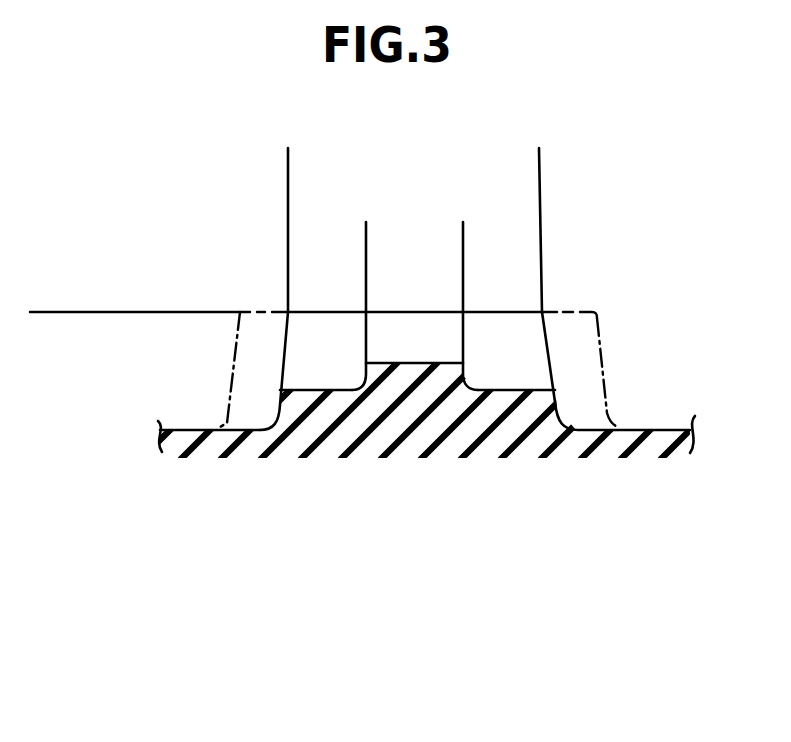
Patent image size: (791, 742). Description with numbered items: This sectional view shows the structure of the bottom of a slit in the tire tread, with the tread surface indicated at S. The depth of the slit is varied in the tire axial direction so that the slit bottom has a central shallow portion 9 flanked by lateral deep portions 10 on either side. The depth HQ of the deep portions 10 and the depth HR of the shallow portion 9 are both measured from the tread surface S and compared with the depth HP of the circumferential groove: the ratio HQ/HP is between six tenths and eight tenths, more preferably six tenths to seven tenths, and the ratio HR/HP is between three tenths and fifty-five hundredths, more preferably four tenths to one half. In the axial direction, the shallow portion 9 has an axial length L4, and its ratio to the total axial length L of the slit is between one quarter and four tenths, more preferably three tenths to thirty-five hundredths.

The central shallow portion 9 is at (402, 358).
The lateral deep portions 10 is at (311, 384).
The tread surface (original profile) S is at (257, 260).
The total axial length of the slit L is at (539, 160).
The axial length of the shallow portion L4 is at (366, 232).
The depth of the circumferential groove HP is at (160, 430).
The depth of the deep portions HQ is at (280, 390).
The depth of the shallow portion HR is at (366, 363).